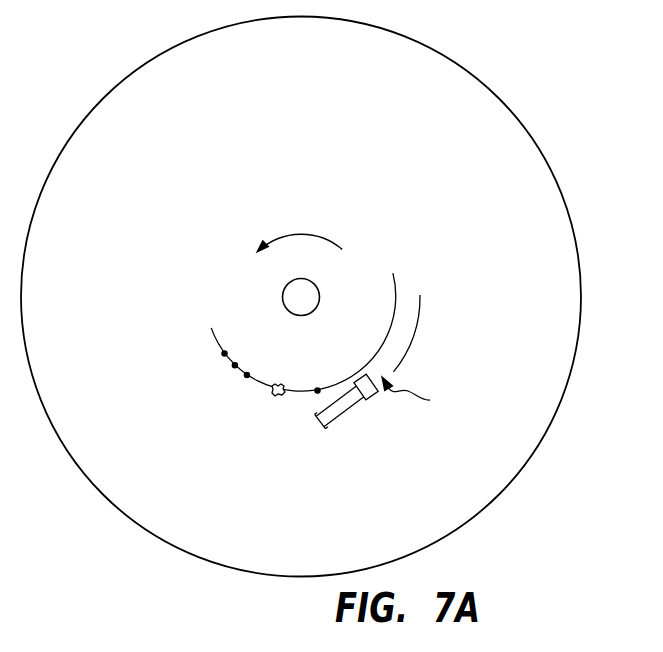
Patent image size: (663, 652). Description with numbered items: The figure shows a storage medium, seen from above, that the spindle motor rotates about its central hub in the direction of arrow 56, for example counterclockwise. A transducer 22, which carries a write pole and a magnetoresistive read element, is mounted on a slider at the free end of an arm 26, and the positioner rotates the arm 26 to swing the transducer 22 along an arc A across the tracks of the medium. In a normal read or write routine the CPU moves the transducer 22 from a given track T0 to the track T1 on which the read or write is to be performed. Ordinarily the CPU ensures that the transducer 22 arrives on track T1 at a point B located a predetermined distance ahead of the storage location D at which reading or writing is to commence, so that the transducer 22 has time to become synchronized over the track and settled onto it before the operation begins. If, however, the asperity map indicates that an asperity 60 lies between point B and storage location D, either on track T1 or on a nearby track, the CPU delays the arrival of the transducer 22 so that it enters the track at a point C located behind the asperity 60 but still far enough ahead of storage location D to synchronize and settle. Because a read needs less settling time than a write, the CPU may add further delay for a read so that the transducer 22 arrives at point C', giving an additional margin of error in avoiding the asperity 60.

The arrow 56 is at (302, 233).
The track T1 is at (396, 293).
The track T0 is at (420, 314).
The arc A is at (413, 393).
The transducer 22 is at (372, 397).
The arm 26 is at (337, 418).
The point B is at (318, 388).
The point C is at (251, 350).
The point C' is at (224, 386).
The storage location D is at (224, 355).
The asperity 60 is at (275, 396).